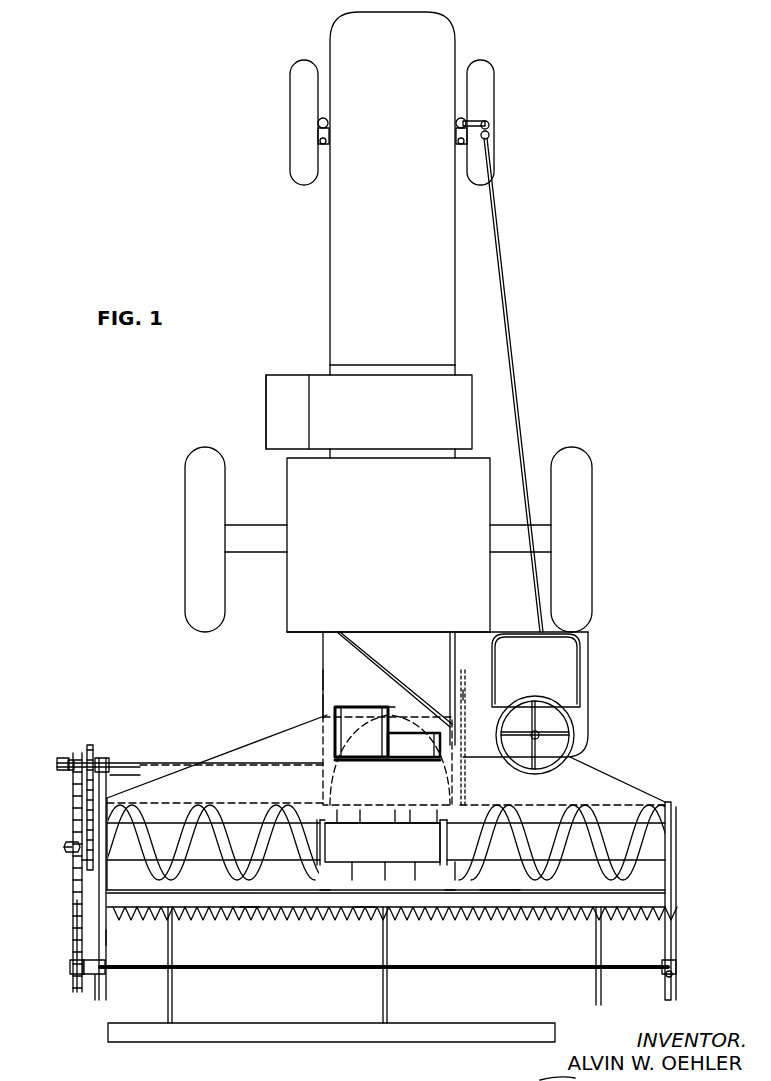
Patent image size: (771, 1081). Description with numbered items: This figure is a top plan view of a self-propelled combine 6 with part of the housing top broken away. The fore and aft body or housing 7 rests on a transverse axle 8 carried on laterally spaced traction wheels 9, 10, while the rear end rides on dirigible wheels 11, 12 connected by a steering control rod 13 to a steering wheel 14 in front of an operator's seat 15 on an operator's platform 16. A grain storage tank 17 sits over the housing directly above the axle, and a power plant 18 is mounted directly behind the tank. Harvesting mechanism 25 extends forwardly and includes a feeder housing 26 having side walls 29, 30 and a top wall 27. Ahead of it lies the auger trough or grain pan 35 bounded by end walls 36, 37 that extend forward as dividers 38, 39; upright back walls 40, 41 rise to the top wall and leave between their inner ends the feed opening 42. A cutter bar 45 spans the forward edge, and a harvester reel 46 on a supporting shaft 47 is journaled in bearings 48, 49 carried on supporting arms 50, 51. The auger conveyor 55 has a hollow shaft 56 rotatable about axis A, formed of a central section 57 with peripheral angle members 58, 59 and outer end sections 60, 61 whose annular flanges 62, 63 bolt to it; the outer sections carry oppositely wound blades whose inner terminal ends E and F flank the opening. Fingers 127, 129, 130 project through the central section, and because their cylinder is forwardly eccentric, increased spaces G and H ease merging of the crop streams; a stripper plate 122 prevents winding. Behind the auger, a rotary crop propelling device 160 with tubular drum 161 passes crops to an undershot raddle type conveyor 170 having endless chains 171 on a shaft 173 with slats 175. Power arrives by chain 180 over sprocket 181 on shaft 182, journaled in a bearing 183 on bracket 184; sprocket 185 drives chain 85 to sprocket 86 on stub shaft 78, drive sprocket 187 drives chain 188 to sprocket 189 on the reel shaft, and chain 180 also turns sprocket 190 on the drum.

The self-propelled combine 6 is at (236, 403).
The body or housing 7 is at (380, 250).
The transverse axle 8 is at (258, 548).
The traction wheel 9 is at (215, 614).
The traction wheel 10 is at (580, 580).
The dirigible wheel 11 is at (298, 88).
The dirigible wheel 12 is at (488, 88).
The steering control rod 13 is at (501, 275).
The steering wheel 14 is at (576, 727).
The operator's seat 15 is at (525, 670).
The operator's platform 16 is at (588, 662).
The grain storage tank 17 is at (375, 519).
The power plant 18 is at (375, 424).
The harvesting mechanism 25 is at (227, 734).
The feeder housing 26 is at (316, 682).
The top wall 27 is at (347, 692).
The vertical side wall 29 is at (323, 700).
The vertical side wall 30 is at (455, 655).
The auger trough or grain pan 35 is at (497, 880).
The end wall 36 is at (106, 878).
The end wall 37 is at (677, 880).
The divider 38 is at (98, 985).
The divider 39 is at (678, 985).
The back wall 40 is at (235, 805).
The back wall 41 is at (580, 806).
The feed opening 42 is at (320, 838).
The cutter bar 45 is at (292, 918).
The harvester reel 46 is at (270, 1030).
The supporting shaft 47 is at (255, 969).
The bearing 48 is at (105, 963).
The bearing 49 is at (678, 966).
The supporting arm 50 is at (106, 937).
The supporting arm 51 is at (677, 928).
The auger conveyor 55 is at (220, 912).
The hollow shaft 56 is at (262, 912).
The central section 57 is at (366, 905).
The angle member 58 is at (337, 875).
The angle member 59 is at (435, 875).
The outer end section 60 is at (205, 853).
The outer end section 61 is at (538, 855).
The annular flange 62 is at (270, 860).
The annular flange 63 is at (450, 852).
The stub shaft 78 is at (64, 848).
The chain 85 is at (74, 800).
The sprocket 86 is at (84, 866).
The stripper plate 122 is at (162, 830).
The fingers 127 is at (396, 905).
The fingers 129 is at (385, 858).
The fingers 130 is at (383, 841).
The rotary crop propelling device 160 is at (340, 790).
The tubular drum 161 is at (355, 805).
The undershot raddle type conveyor 170 is at (403, 705).
The endless chain 171 is at (390, 742).
The shaft 173 is at (425, 760).
The crop engageable slat 175 is at (401, 733).
The chain 180 is at (465, 695).
The sprocket 181 is at (483, 738).
The shaft 182 is at (140, 764).
The bearing 183 is at (105, 758).
The bracket 184 is at (130, 776).
The sprocket 185 is at (90, 745).
The drive sprocket 187 is at (64, 760).
The chain 188 is at (73, 918).
The sprocket 189 is at (72, 975).
The sprocket 190 is at (470, 803).
The axis A is at (61, 858).
The inner terminal end E is at (325, 898).
The inner terminal end F is at (450, 898).
The increased space G is at (366, 824).
The increased space H is at (562, 814).